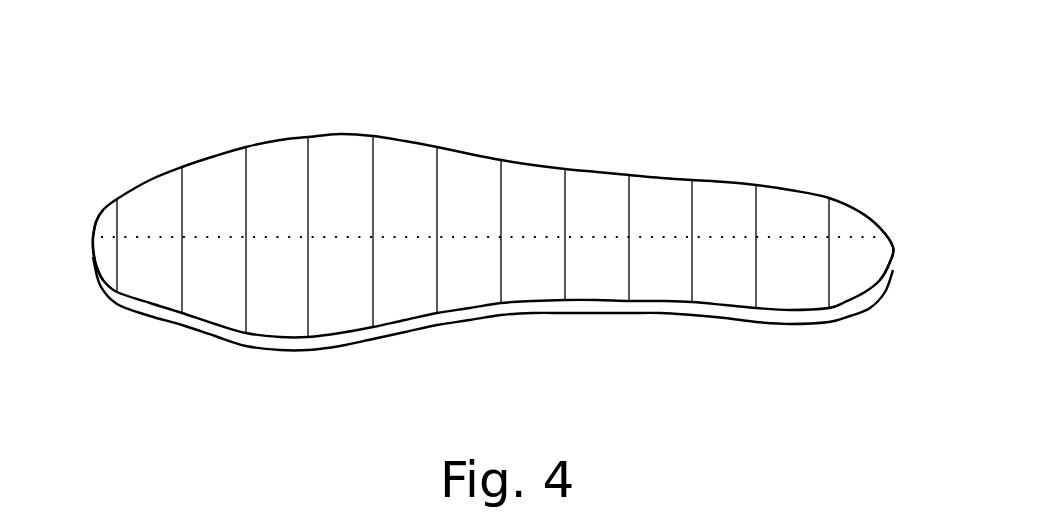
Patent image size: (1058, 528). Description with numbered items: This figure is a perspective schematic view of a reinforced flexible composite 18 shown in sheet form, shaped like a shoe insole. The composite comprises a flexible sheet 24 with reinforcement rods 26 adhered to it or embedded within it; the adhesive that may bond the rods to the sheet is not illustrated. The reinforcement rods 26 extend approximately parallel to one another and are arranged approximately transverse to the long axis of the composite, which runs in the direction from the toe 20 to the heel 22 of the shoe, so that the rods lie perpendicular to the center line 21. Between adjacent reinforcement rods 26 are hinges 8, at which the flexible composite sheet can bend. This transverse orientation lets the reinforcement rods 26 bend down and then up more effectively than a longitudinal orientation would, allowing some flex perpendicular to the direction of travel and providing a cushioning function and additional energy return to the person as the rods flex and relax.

The hinges 8 is at (670, 283).
The reinforced flexible composite 18 is at (298, 114).
The toe 20 is at (93, 233).
The center line 21 is at (141, 247).
The heel 22 is at (887, 232).
The flexible sheet 24 is at (758, 128).
The reinforcement rods 26 is at (473, 181).